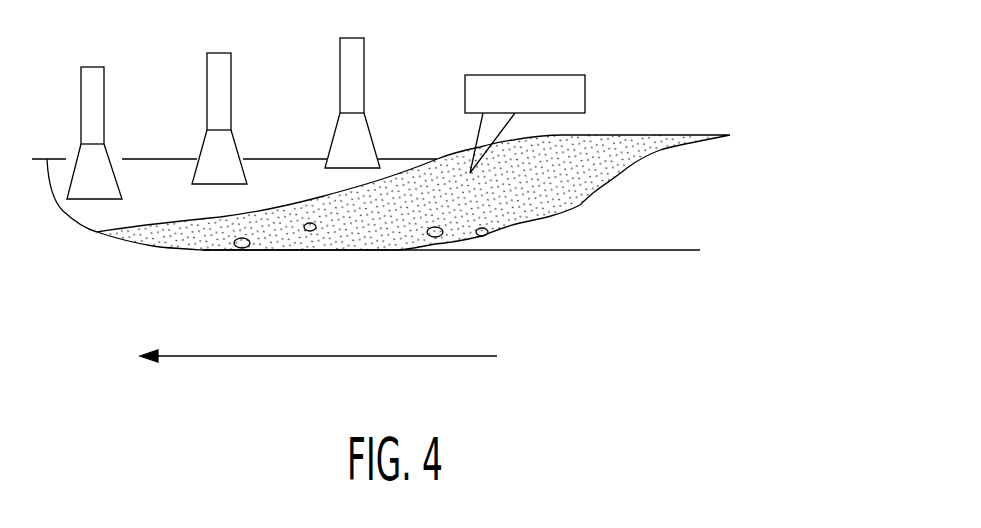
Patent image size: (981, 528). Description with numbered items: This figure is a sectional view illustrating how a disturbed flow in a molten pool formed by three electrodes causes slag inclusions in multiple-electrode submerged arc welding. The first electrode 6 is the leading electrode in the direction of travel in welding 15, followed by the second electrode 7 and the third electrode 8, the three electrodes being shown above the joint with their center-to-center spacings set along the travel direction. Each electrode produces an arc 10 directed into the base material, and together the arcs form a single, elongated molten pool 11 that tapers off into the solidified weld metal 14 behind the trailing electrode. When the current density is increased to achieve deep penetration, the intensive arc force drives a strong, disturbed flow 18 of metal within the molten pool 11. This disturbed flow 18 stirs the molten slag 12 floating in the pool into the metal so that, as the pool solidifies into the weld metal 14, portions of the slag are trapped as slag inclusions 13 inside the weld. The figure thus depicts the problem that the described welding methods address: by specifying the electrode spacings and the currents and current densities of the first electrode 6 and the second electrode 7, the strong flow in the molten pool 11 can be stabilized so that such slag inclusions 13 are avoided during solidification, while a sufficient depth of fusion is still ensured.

The first electrode 6 is at (92, 66).
The second electrode 7 is at (220, 53).
The third electrode 8 is at (364, 57).
The arc 10 is at (235, 100).
The molten pool 11 is at (612, 133).
The molten slag 12 is at (247, 249).
The slag inclusion 13 is at (437, 238).
The weld metal 14 is at (628, 215).
The direction of travel in welding 15 is at (305, 357).
The disturbed flow 18 is at (518, 83).